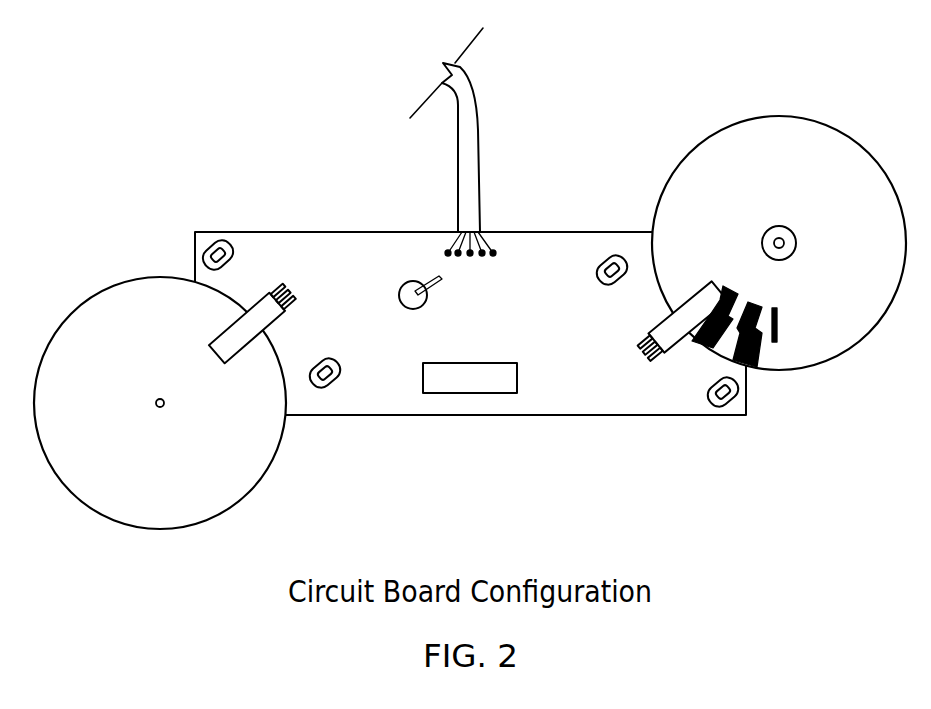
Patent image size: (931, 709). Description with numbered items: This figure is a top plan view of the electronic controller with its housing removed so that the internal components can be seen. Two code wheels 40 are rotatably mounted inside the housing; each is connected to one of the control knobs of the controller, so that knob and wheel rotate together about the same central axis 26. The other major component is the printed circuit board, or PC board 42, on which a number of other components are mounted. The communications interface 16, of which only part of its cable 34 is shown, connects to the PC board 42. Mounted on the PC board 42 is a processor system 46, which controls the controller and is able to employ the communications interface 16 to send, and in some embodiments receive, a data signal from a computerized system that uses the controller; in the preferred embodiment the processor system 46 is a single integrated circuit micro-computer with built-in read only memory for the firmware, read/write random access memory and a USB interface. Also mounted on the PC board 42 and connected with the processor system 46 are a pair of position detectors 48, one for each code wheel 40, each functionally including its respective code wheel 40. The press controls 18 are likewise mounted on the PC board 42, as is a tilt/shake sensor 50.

The communications interface 16 is at (497, 100).
The cable 34 is at (470, 180).
The position detector 48 is at (110, 246).
The code wheel 40 is at (133, 372).
The central axis 26 is at (156, 405).
The press control 18 is at (234, 257).
The tilt/shake sensor 50 is at (396, 303).
The PC board 42 is at (488, 326).
The processor system 46 is at (500, 372).